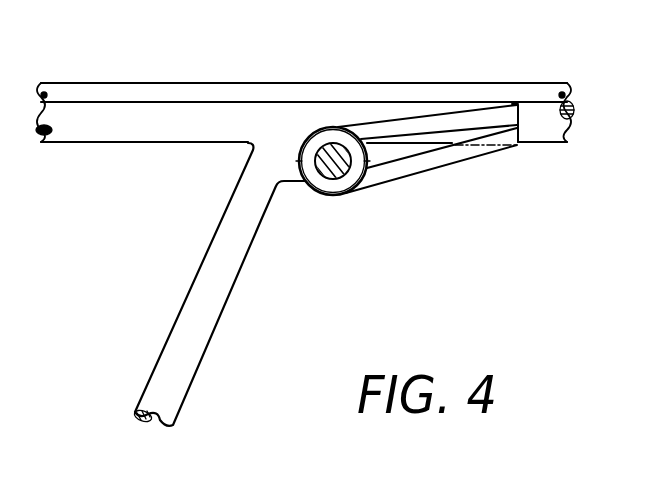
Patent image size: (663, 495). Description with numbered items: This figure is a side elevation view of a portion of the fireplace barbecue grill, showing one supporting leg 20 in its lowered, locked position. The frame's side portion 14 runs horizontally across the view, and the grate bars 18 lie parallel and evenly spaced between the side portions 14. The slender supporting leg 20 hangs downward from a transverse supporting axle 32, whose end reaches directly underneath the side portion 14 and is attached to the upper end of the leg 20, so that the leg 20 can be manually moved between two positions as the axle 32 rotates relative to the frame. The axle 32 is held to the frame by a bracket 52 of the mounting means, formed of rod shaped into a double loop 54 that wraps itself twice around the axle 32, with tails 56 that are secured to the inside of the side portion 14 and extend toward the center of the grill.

The side portions 14 is at (258, 117).
The bars 18 is at (163, 92).
The supporting leg 20 is at (180, 344).
The transverse supporting axle 32 is at (340, 180).
The bracket 52 is at (333, 126).
The double loop 54 is at (328, 196).
The tails 56 is at (438, 124).